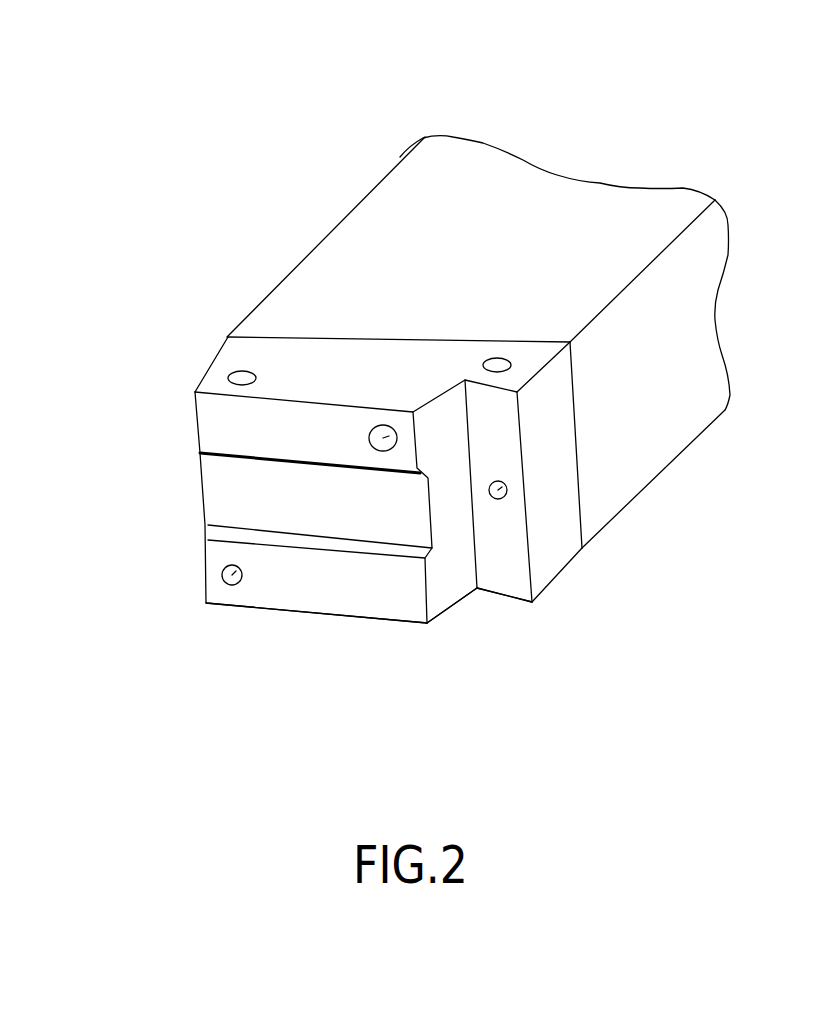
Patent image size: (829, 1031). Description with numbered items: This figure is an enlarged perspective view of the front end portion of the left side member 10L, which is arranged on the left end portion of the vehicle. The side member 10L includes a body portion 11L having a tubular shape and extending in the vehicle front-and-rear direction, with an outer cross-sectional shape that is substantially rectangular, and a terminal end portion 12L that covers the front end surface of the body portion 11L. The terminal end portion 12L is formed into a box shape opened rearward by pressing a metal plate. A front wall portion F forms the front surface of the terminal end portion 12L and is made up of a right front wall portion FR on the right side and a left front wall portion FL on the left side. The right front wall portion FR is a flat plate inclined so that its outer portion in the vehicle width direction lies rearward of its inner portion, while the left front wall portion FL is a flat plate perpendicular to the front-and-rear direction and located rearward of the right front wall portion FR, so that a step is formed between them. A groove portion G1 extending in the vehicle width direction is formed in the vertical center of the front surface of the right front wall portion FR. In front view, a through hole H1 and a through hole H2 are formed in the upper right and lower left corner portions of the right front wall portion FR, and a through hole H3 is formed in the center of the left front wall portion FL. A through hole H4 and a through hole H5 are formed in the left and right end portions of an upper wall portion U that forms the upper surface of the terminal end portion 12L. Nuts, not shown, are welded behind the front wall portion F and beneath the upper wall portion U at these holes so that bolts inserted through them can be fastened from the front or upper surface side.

The side member 10L is at (440, 103).
The body portion 11L is at (492, 250).
The terminal end portion 12L is at (311, 366).
The upper wall portion U is at (442, 360).
The groove portion G1 is at (293, 493).
The through hole H1 is at (370, 434).
The through hole H2 is at (222, 580).
The through hole H3 is at (502, 503).
The through hole H4 is at (500, 358).
The through hole H5 is at (240, 371).
The front wall portion F is at (445, 680).
The right front wall portion FR is at (390, 598).
The left front wall portion FL is at (490, 568).